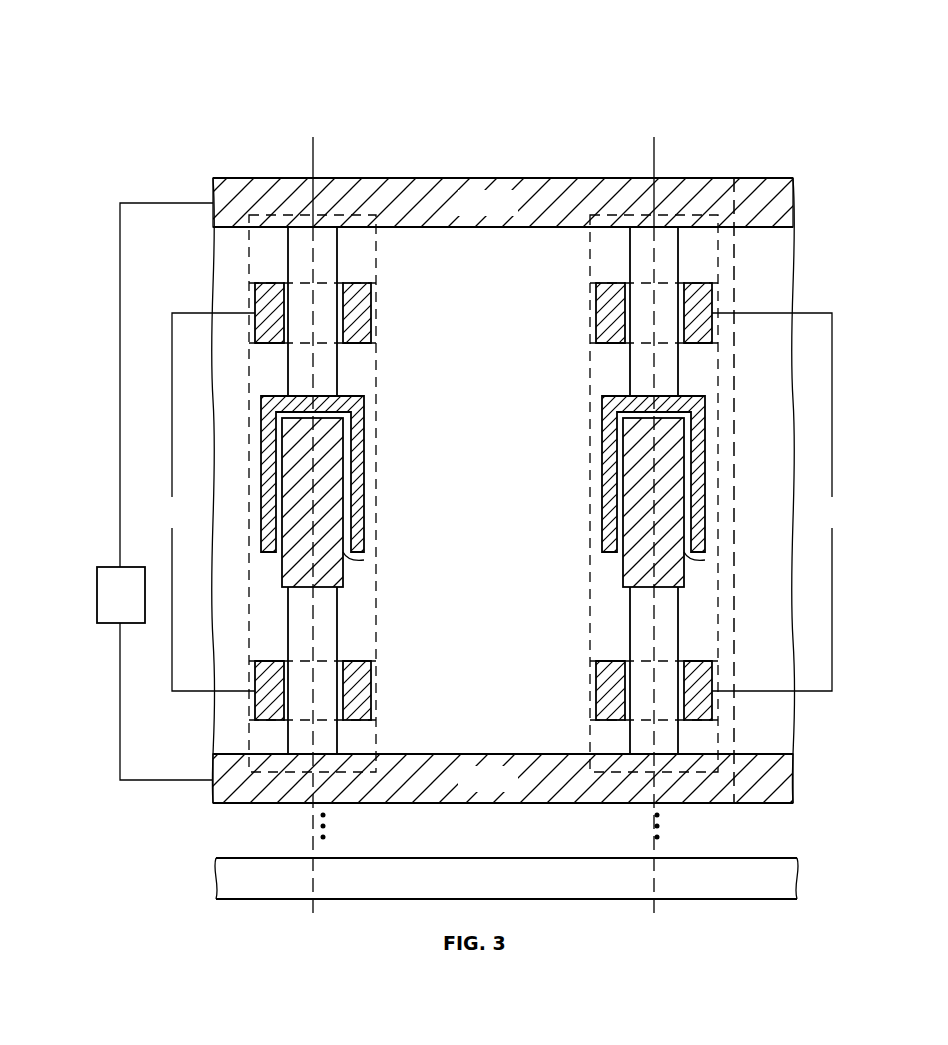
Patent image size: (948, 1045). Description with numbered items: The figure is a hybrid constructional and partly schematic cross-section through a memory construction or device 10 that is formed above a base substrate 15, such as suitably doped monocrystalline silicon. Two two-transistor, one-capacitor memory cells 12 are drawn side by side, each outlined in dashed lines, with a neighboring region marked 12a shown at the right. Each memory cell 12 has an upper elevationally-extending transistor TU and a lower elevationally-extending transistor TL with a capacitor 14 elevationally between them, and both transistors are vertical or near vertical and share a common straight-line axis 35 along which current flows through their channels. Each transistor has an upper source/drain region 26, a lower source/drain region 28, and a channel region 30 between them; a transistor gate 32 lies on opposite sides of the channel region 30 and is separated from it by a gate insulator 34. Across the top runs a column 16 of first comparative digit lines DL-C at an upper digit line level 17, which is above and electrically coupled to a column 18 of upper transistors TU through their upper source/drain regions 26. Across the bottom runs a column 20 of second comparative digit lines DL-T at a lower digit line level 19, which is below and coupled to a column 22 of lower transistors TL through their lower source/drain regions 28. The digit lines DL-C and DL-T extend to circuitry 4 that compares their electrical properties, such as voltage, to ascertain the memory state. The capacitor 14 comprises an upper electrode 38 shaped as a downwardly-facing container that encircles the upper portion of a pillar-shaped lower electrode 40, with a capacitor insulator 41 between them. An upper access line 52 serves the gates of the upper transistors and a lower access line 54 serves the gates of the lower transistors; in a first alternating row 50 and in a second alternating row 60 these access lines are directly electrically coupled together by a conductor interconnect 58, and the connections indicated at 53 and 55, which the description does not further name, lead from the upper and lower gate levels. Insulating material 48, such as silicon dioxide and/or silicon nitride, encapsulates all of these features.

The substrate, construction, or device 10 is at (822, 108).
The memory cell 12 is at (338, 202).
The adjacent memory cell 12a is at (815, 362).
The capacitor 14 is at (377, 508).
The base substrate 15 is at (720, 891).
The column of first comparative digit lines 16 is at (498, 157).
The upper digit line level 17 is at (94, 203).
The column of upper elevationally-extending transistors 18 is at (848, 313).
The lower digit line level 19 is at (94, 780).
The column of second comparative digit lines 20 is at (797, 785).
The column of lower elevationally-extending transistors 22 is at (848, 691).
The upper source/drain region 26 is at (325, 266).
The lower source/drain region 28 is at (325, 381).
The channel region 30 is at (325, 324).
The transistor gate 32 is at (268, 306).
The gate insulator 34 is at (282, 345).
The common straight-line axis 35 is at (309, 155).
The upper electrode 38 is at (356, 462).
The lower electrode 40 is at (317, 562).
The capacitor insulator 41 is at (364, 558).
The insulating material 48 is at (242, 511).
The first alternating row 50 is at (313, 120).
The upper access line 52 is at (375, 297).
The upper transistor gate connection 53 is at (90, 313).
The lower access line 54 is at (375, 690).
The lower transistor gate connection 55 is at (90, 691).
The conductor interconnect 58 is at (502, 502).
The second alternating row 60 is at (654, 120).
The circuitry 4 is at (155, 491).
The upper elevationally-extending transistor TU is at (352, 352).
The lower elevationally-extending transistor TL is at (350, 637).
The first comparative digit line DL-C is at (488, 203).
The second comparative digit line DL-T is at (488, 779).